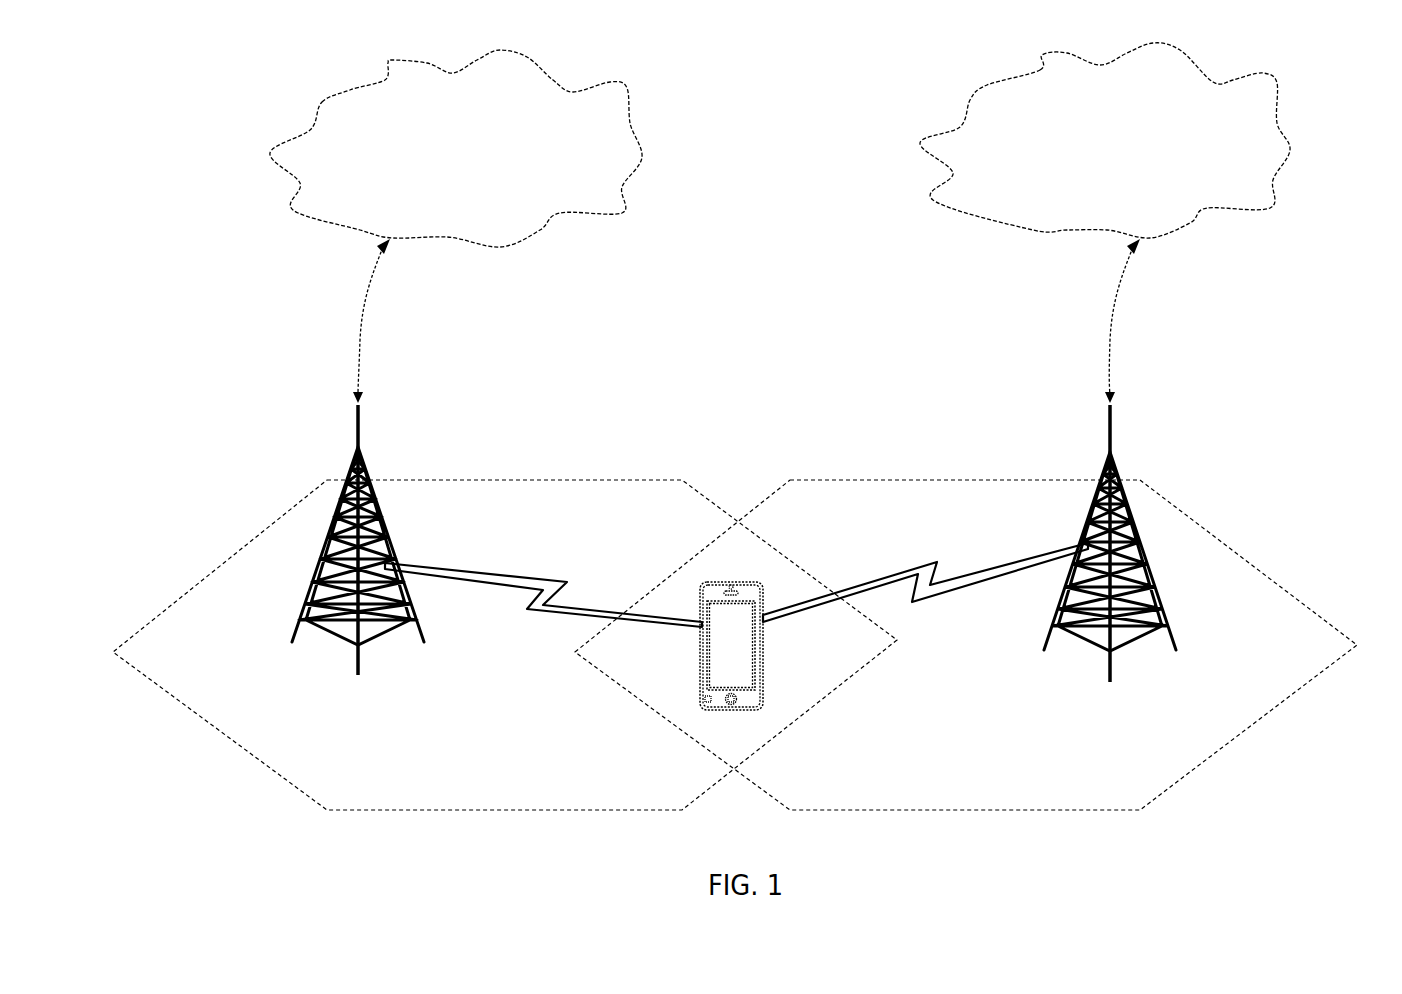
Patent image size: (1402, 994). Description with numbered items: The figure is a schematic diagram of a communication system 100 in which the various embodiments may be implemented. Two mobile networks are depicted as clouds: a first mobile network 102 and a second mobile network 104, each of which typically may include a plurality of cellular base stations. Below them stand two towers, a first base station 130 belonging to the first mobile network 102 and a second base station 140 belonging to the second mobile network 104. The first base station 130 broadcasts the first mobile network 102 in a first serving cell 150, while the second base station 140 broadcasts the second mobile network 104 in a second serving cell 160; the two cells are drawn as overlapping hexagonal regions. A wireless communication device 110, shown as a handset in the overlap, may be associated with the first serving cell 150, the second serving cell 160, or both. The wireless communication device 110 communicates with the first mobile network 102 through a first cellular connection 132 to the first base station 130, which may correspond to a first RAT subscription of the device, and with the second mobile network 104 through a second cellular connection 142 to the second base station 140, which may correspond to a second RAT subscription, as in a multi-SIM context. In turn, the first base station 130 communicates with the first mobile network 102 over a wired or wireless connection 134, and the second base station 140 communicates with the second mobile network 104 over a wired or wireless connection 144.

The communication system 100 is at (782, 129).
The first mobile network 102 is at (345, 90).
The second mobile network 104 is at (1077, 57).
The wireless communication device 110 is at (762, 622).
The first base station 130 is at (320, 600).
The first cellular connection 132 is at (560, 612).
The wired or wireless connection 134 is at (362, 310).
The second base station 140 is at (1150, 600).
The second cellular connection 142 is at (915, 555).
The wired or wireless connection 144 is at (1112, 313).
The first serving cell 150 is at (560, 480).
The second serving cell 160 is at (935, 480).